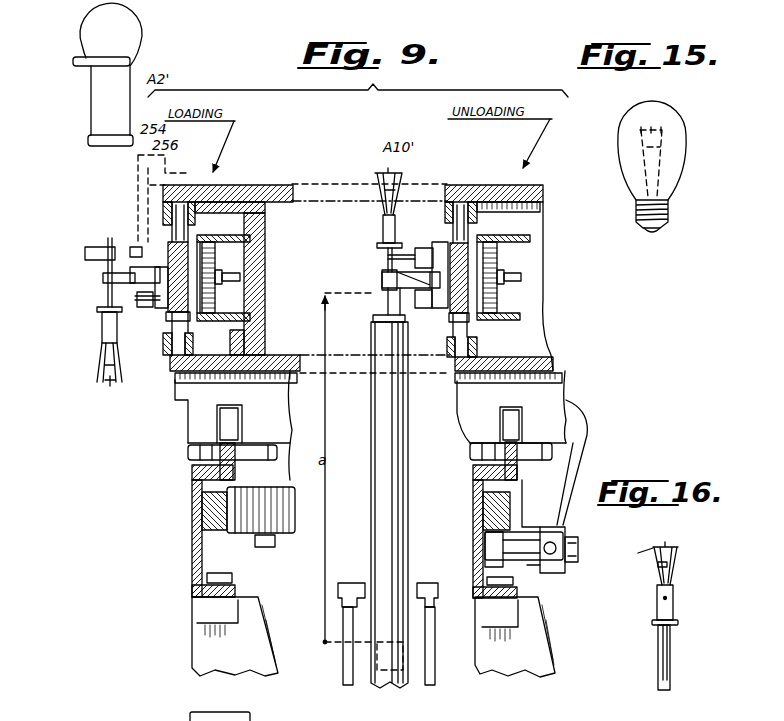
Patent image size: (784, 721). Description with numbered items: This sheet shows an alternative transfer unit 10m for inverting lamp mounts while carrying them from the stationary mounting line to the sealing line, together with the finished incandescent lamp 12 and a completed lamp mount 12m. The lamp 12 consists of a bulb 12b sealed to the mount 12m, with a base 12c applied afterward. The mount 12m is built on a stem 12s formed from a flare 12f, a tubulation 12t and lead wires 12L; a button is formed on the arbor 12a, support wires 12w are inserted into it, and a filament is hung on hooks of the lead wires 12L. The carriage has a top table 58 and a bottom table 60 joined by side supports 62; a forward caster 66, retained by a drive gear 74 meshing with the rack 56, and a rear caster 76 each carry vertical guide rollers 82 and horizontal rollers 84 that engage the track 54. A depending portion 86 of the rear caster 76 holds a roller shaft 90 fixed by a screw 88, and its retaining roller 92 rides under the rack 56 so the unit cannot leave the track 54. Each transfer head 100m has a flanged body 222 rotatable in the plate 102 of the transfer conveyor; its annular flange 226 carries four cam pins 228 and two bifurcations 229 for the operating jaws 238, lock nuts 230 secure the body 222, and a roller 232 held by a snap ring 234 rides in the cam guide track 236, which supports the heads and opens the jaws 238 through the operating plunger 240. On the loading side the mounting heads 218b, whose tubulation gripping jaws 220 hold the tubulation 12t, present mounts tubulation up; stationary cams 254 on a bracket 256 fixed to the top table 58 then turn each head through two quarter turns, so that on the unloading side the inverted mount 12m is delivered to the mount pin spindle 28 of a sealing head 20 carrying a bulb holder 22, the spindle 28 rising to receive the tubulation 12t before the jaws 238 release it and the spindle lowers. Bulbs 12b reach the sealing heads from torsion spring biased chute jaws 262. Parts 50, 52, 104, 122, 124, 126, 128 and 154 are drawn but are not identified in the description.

In FIG. 15, the incandescent lamp 12 is at (655, 165).
In FIG. 9, the bulb 12b is at (140, 33).
In FIG. 15, the bulb 12b is at (628, 158).
In FIG. 9, the mount 12m is at (385, 222).
In FIG. 15, the mount 12m is at (657, 187).
In FIG. 16, the mount 12m is at (675, 600).
In FIG. 15, the base 12c is at (668, 216).
In FIG. 16, the flare 12f is at (664, 550).
In FIG. 16, the support wires 12w is at (652, 557).
In FIG. 16, the arbor 12a is at (668, 575).
In FIG. 9, the stem 12s is at (100, 320).
In FIG. 16, the stem 12s is at (657, 617).
In FIG. 16, the lead wires 12L is at (667, 648).
In FIG. 9, the tubulation 12t is at (108, 243).
In FIG. 16, the tubulation 12t is at (670, 677).
In FIG. 9, the transfer unit 10m is at (258, 168).
In FIG. 9, the sealing heads 20 is at (437, 688).
In FIG. 9, the sealing-head bulb holder 22 is at (428, 582).
In FIG. 9, the mount pin spindle 28 is at (382, 475).
In FIG. 9, the frame wall 50 is at (193, 572).
In FIG. 9, the base block 52 is at (205, 641).
In FIG. 9, the track 54 is at (192, 472).
In FIG. 9, the rack 56 is at (205, 513).
In FIG. 9, the top table 58 is at (244, 186).
In FIG. 9, the bottom table 60 is at (566, 362).
In FIG. 9, the side supports 62 is at (266, 224).
In FIG. 9, the forward caster 66 is at (195, 405).
In FIG. 9, the drive gear 74 is at (295, 533).
In FIG. 9, the rear caster 76 is at (588, 448).
In FIG. 9, the vertical guide rollers 82 is at (230, 417).
In FIG. 9, the horizontal rollers 84 is at (248, 452).
In FIG. 9, the depending portion 86 is at (570, 562).
In FIG. 9, the screw 88 is at (553, 543).
In FIG. 9, the roller shaft 90 is at (527, 565).
In FIG. 9, the retaining roller 92 is at (495, 545).
In FIG. 9, the transfer heads 100m is at (131, 232).
In FIG. 9, the plate 102 is at (230, 262).
In FIG. 9, the collar 104 is at (188, 324).
In FIG. 9, the shaft 122 is at (180, 200).
In FIG. 9, the bearing 124 is at (173, 203).
In FIG. 9, the bearing 126 is at (172, 343).
In FIG. 9, the plate 128 is at (168, 357).
In FIG. 9, the cam 154 is at (238, 720).
In FIG. 9, the mounting heads 218b is at (88, 248).
In FIG. 9, the tubulation gripping jaws 220 is at (87, 250).
In FIG. 9, the flanged body 222 is at (160, 313).
In FIG. 9, the annular flange 226 is at (415, 256).
In FIG. 9, the cam pins 228 is at (130, 297).
In FIG. 9, the bifurcations 229 is at (131, 268).
In FIG. 9, the lock nuts 230 is at (520, 305).
In FIG. 9, the roller 232 is at (235, 300).
In FIG. 9, the snap ring 234 is at (178, 270).
In FIG. 9, the cam guide track 236 is at (218, 240).
In FIG. 9, the operating jaws 238 is at (103, 277).
In FIG. 9, the operating plunger 240 is at (240, 278).
In FIG. 9, the stationary cams 254 is at (153, 129).
In FIG. 9, the bracket 256 is at (165, 145).
In FIG. 9, the chute jaws 262 is at (82, 58).